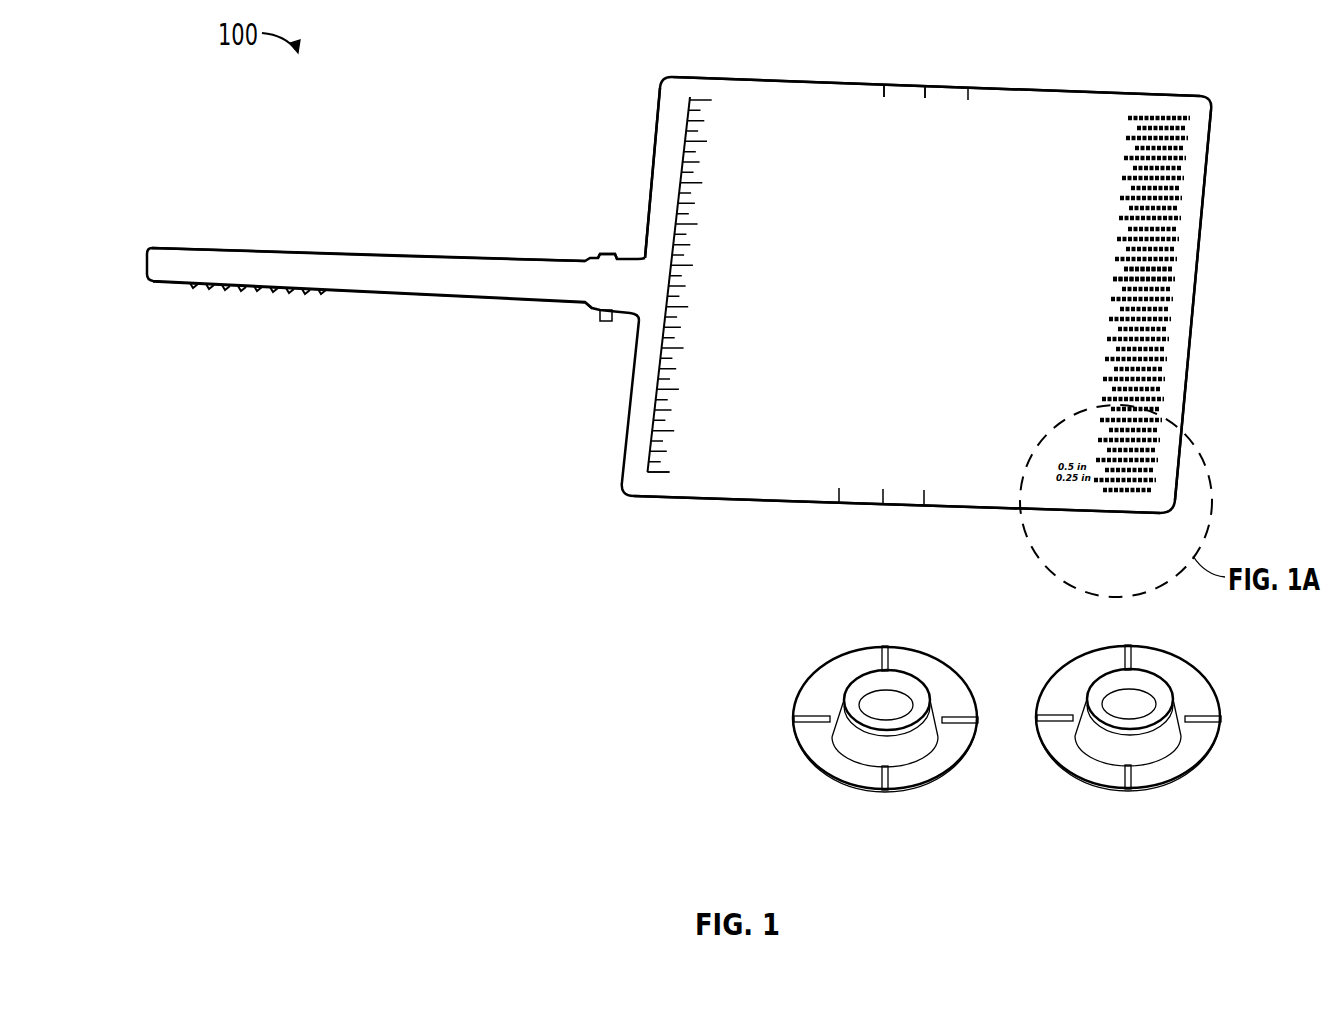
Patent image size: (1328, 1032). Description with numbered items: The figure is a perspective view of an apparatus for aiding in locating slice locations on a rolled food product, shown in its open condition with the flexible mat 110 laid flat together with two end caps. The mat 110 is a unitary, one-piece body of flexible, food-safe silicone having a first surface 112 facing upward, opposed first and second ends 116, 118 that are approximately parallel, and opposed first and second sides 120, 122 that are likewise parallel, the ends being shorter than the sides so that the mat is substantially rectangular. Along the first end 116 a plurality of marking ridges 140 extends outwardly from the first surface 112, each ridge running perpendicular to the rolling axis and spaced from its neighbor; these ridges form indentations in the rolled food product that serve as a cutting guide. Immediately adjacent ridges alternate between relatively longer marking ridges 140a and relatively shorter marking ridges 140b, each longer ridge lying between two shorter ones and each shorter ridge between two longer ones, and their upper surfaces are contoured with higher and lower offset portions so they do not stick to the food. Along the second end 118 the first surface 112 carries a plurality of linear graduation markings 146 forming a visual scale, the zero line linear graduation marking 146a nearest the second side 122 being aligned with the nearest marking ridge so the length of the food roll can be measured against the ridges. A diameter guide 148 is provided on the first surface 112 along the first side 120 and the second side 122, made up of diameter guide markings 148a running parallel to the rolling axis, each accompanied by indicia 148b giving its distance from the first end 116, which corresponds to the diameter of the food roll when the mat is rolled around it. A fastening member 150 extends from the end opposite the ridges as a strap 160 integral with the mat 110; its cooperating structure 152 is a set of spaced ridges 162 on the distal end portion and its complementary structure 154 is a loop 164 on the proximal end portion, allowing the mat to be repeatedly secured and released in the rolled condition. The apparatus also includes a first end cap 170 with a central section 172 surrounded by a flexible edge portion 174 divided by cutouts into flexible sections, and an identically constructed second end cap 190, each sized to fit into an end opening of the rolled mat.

The mat 110 is at (1077, 108).
The first surface 112 is at (775, 100).
The first end 116 is at (1198, 320).
The second end 118 is at (652, 160).
The first side 120 is at (826, 79).
The second side 122 is at (790, 503).
The marking ridges 140 is at (1172, 116).
The relatively longer marking ridge 140a is at (1112, 280).
The relatively shorter marking ridge 140b is at (1173, 273).
The linear graduation markings 146 is at (648, 440).
The zero line linear graduation marking 146a is at (650, 475).
The diameter guide 148 is at (972, 90).
The diameter guide markings 148a is at (882, 95).
The indicia 148b is at (925, 122).
The fastening member 150 is at (412, 296).
The structure 152 is at (278, 250).
The complementary structure 154 is at (606, 321).
The strap 160 is at (430, 258).
The ridges 162 is at (270, 296).
The loop 164 is at (608, 254).
The end cap 170 is at (875, 788).
The central section 172 is at (898, 685).
The flexible edge portion 174 is at (858, 719).
The second end cap 190 is at (1118, 788).